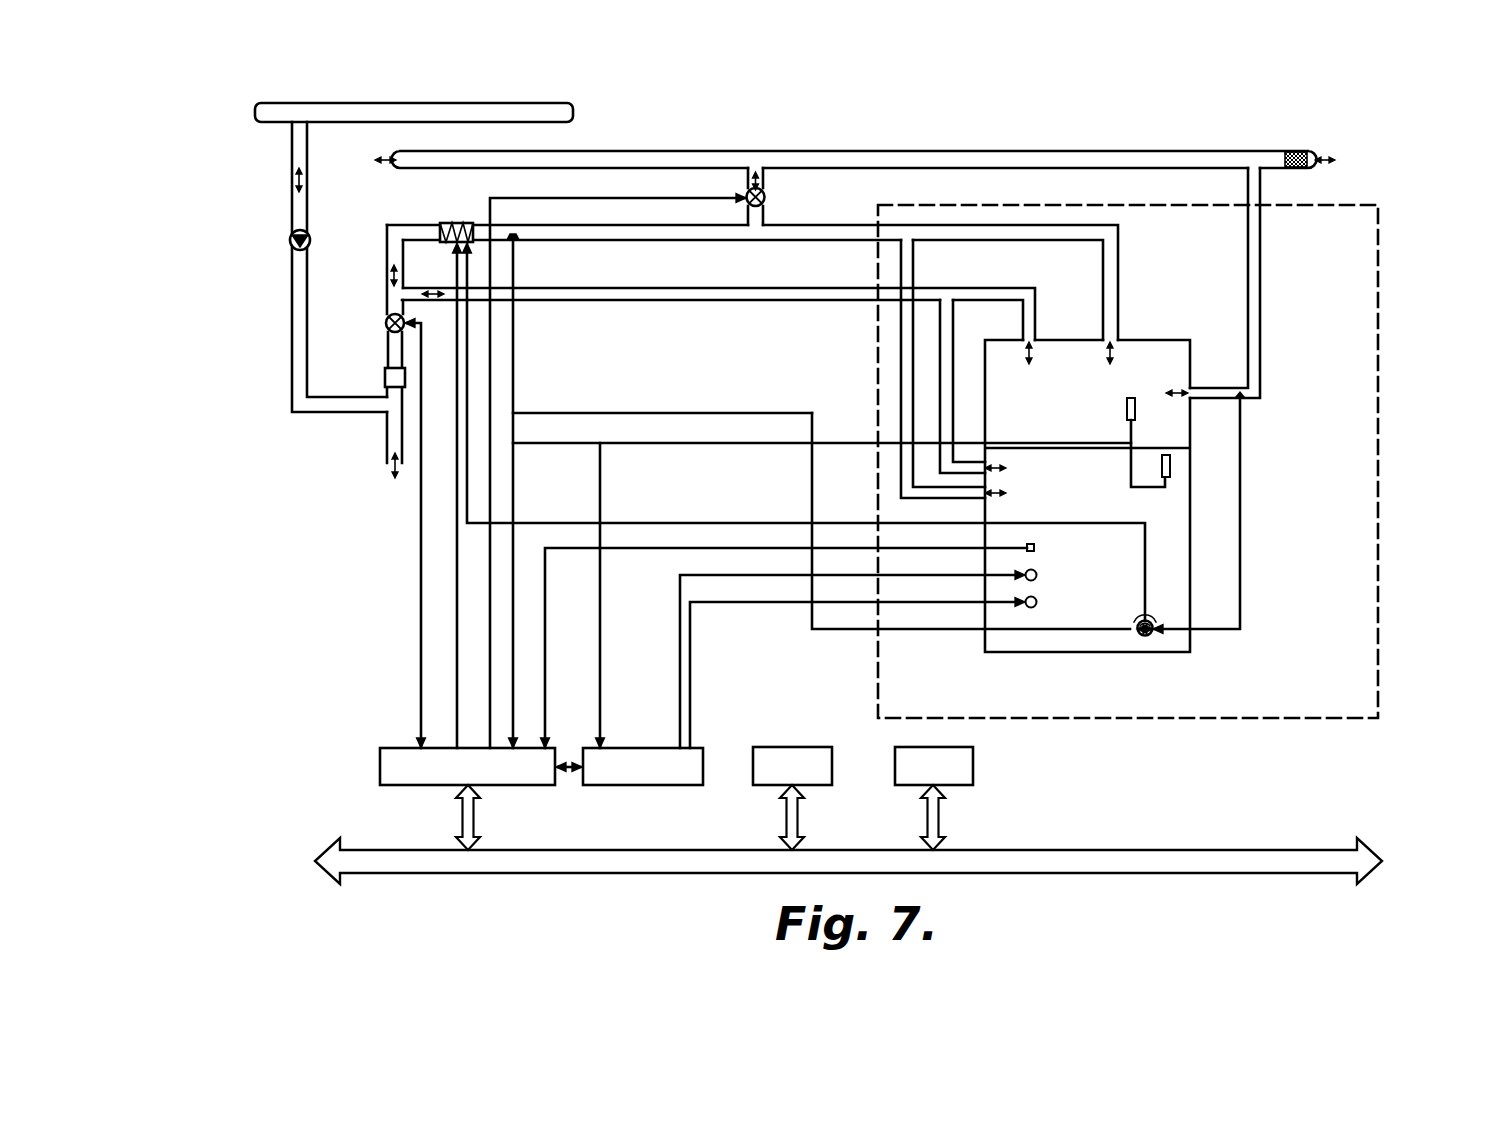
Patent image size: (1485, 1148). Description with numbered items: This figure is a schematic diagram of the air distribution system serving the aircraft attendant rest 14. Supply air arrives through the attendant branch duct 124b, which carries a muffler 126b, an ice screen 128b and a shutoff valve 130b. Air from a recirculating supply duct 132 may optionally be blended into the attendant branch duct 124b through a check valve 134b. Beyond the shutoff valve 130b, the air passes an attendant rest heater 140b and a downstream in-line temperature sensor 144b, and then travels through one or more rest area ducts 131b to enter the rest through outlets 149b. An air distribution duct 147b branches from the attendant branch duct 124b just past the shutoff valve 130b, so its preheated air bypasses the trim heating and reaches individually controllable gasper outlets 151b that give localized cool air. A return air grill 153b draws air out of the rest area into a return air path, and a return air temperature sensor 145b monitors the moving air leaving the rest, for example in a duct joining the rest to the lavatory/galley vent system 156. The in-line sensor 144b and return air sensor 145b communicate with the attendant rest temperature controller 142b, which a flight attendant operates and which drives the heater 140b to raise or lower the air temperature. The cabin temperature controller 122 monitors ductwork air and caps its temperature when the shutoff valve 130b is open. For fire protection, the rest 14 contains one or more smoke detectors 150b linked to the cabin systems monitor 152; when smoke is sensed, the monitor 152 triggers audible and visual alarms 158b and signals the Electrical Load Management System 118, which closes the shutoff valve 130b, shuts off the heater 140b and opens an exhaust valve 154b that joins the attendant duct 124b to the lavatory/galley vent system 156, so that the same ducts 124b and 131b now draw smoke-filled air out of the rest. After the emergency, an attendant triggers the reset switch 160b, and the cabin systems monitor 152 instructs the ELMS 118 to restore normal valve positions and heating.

The recirculating supply duct 132 is at (573, 108).
The lavatory/galley vent system 156 is at (1300, 151).
The ice screen 128b is at (290, 366).
The check valve 134b is at (289, 242).
The exhaust valve 154b is at (784, 198).
The attendant branch duct 124b is at (715, 240).
The rest area duct 131b is at (915, 250).
The attendant rest heater 140b is at (452, 222).
The in-line temperature sensor 144b is at (517, 243).
The shutoff valve 130b is at (386, 318).
The muffler 126b is at (385, 378).
The air distribution duct 147b is at (666, 300).
The individual air outlets 151b is at (1032, 330).
The outlets 149b is at (1120, 330).
The return air grill 153b is at (1215, 365).
The return air temperature sensor 145b is at (1243, 401).
The smoke detector 150b is at (1126, 410).
The attendant rest 14 is at (1380, 416).
The reset switch 160b is at (1036, 547).
The audible and visual alarms 158b is at (1037, 577).
The attendant rest temperature controller 142b is at (1150, 636).
The Electrical Load Management System 118 is at (474, 779).
The cabin systems monitor 152 is at (650, 779).
The cabin temperature controller 122 is at (798, 779).